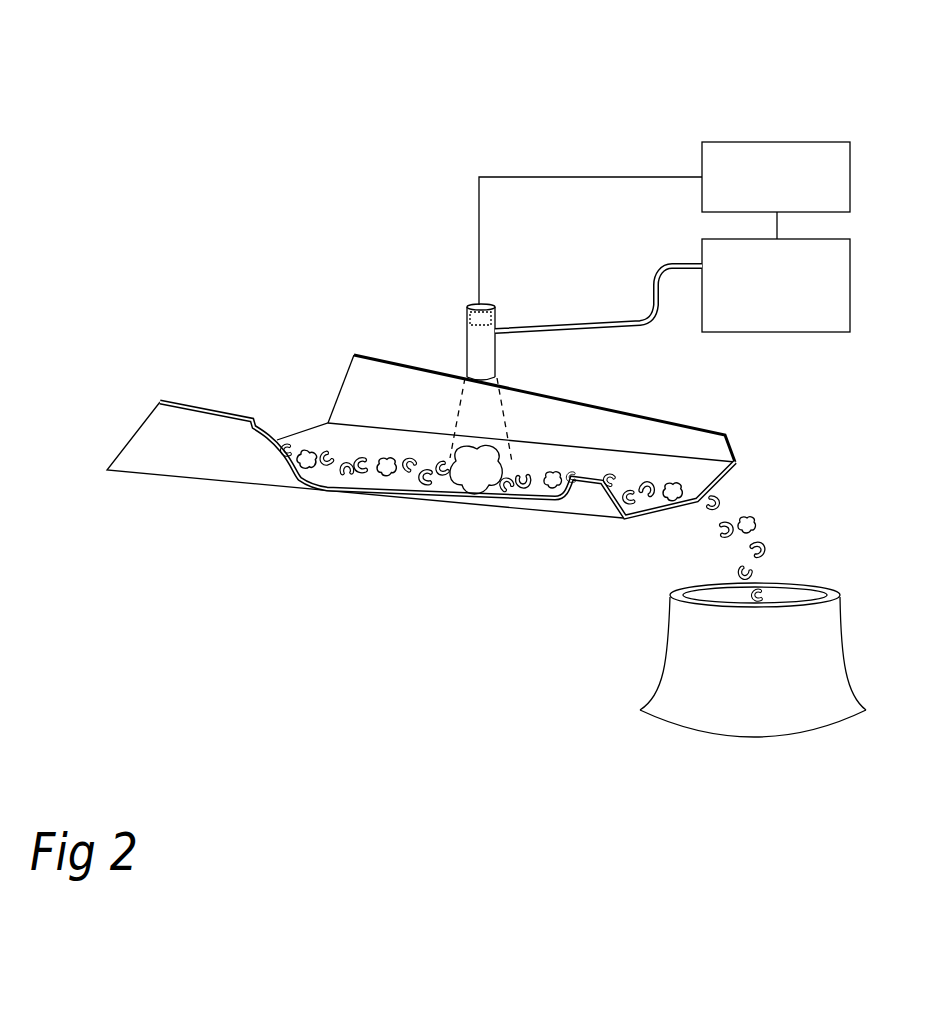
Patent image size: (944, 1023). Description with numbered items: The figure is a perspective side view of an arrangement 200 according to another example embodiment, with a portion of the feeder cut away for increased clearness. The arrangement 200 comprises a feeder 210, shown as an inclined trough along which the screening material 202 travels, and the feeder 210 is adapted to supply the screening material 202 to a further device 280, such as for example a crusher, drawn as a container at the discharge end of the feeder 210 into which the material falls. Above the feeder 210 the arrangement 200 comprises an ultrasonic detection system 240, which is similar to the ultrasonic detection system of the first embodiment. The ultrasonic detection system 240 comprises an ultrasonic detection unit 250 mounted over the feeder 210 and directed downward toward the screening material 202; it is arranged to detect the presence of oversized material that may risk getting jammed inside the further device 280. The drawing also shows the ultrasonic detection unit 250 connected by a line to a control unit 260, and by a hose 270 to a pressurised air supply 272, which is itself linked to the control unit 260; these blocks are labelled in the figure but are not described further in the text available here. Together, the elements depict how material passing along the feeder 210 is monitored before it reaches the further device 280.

The arrangement 200 is at (217, 108).
The screening material 202 is at (353, 450).
The feeder 210 is at (150, 378).
The ultrasonic detection system 240 is at (560, 152).
The ultrasonic detection unit 250 is at (472, 302).
The control unit 260 is at (776, 177).
The air line 270 is at (665, 253).
The pressurised air supply 272 is at (776, 285).
The further device 280 is at (650, 668).